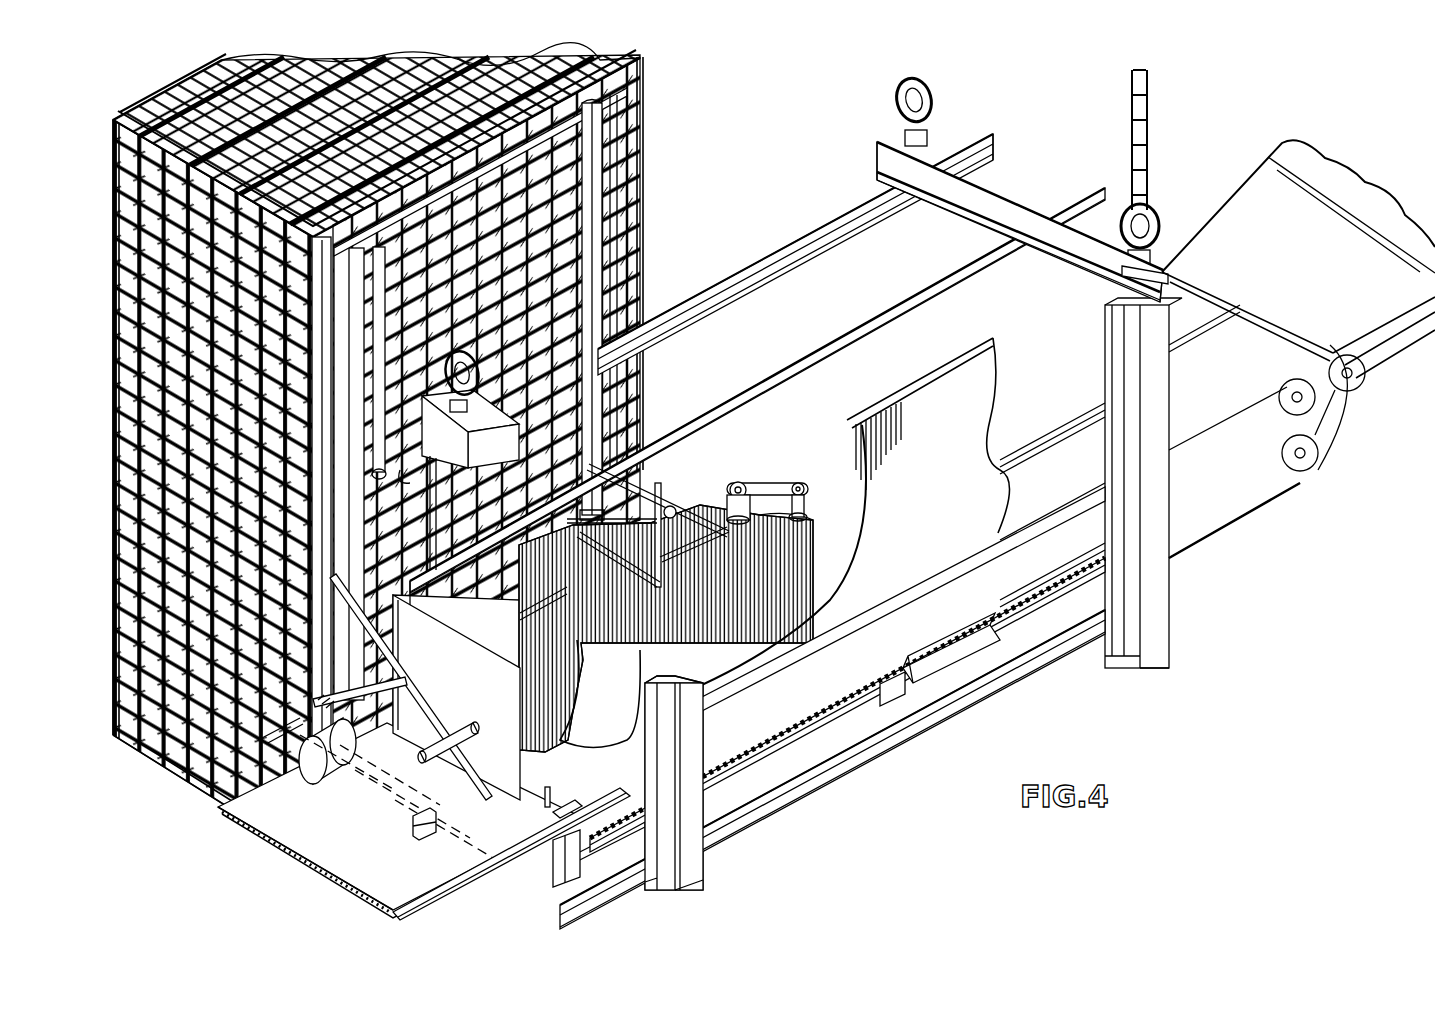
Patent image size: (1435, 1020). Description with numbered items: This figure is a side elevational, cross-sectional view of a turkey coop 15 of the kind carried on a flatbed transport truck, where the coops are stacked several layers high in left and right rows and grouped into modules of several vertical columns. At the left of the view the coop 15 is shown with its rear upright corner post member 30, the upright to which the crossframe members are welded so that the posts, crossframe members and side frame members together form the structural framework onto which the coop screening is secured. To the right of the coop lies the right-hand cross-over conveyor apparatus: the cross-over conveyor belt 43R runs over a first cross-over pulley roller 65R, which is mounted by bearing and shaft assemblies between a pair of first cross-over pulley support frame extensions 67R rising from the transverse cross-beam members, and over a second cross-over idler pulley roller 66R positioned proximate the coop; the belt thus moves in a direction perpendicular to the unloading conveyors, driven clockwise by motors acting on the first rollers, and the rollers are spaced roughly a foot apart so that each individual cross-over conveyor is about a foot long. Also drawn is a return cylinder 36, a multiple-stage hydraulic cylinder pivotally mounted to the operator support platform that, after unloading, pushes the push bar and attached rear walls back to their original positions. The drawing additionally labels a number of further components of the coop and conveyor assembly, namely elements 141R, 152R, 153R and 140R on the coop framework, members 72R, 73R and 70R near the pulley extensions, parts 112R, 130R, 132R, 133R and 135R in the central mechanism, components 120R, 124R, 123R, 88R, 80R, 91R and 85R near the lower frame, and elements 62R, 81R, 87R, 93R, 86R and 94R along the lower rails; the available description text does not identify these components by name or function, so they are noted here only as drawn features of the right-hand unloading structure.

The rear upright corner post member 30 is at (415, 449).
The turkey coop 15 is at (214, 238).
The cage top panel 141R is at (447, 190).
The door hinge rod 152R is at (372, 247).
The door post 153R is at (608, 157).
The cage door 140R is at (641, 196).
The upper far longitudinal beam 72R is at (820, 222).
The upper near longitudinal beam 73R is at (912, 305).
The first cross-over pulley support frame extension 67R is at (1010, 184).
The lifting chain 70R is at (1148, 132).
The return cylinder 36 is at (1298, 349).
The second cross-over idler pulley roller 66R is at (1160, 497).
The first cross-over pulley roller 65R is at (325, 878).
The sheet panel 112R is at (928, 435).
The curved guide plate 130R is at (805, 583).
The pivot 132R is at (664, 508).
The link bars 133R is at (572, 542).
The pulley bracket 135R is at (742, 490).
The gate plate 120R is at (480, 693).
The diagonal strut 124R is at (417, 666).
The pin rod 123R is at (490, 716).
The latch rod 88R is at (330, 703).
The roller axle 80R is at (290, 742).
The roller 91R is at (310, 762).
The direction arrow 85R is at (384, 772).
The cross-over conveyor belt 43R is at (402, 836).
The clip 62R is at (500, 865).
The side rail 81R is at (505, 888).
The bracket 87R is at (585, 868).
The toothed rack rail 93R is at (888, 706).
The stop bracket 86R is at (922, 660).
The slider block 94R is at (895, 690).